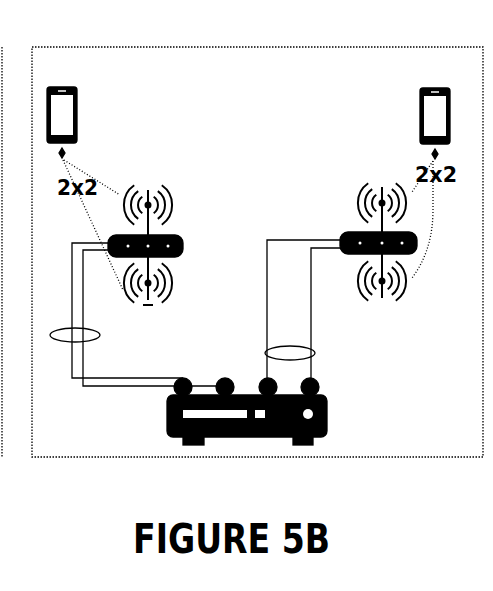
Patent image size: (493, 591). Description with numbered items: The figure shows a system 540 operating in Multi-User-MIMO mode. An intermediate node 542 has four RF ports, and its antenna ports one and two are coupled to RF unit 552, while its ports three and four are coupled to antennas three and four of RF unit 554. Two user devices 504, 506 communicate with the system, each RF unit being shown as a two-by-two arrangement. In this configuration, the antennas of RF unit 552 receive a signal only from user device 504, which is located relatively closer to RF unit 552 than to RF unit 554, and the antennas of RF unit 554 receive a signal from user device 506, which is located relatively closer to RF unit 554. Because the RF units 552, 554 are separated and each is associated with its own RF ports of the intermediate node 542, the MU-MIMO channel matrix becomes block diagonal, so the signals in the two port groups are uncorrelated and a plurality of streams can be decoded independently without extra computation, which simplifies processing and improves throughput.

The system 540 is at (266, 30).
The user device 504 is at (78, 118).
The user device 506 is at (415, 116).
The RF unit 552 is at (115, 236).
The RF unit 554 is at (350, 260).
The intermediate node 542 is at (330, 413).